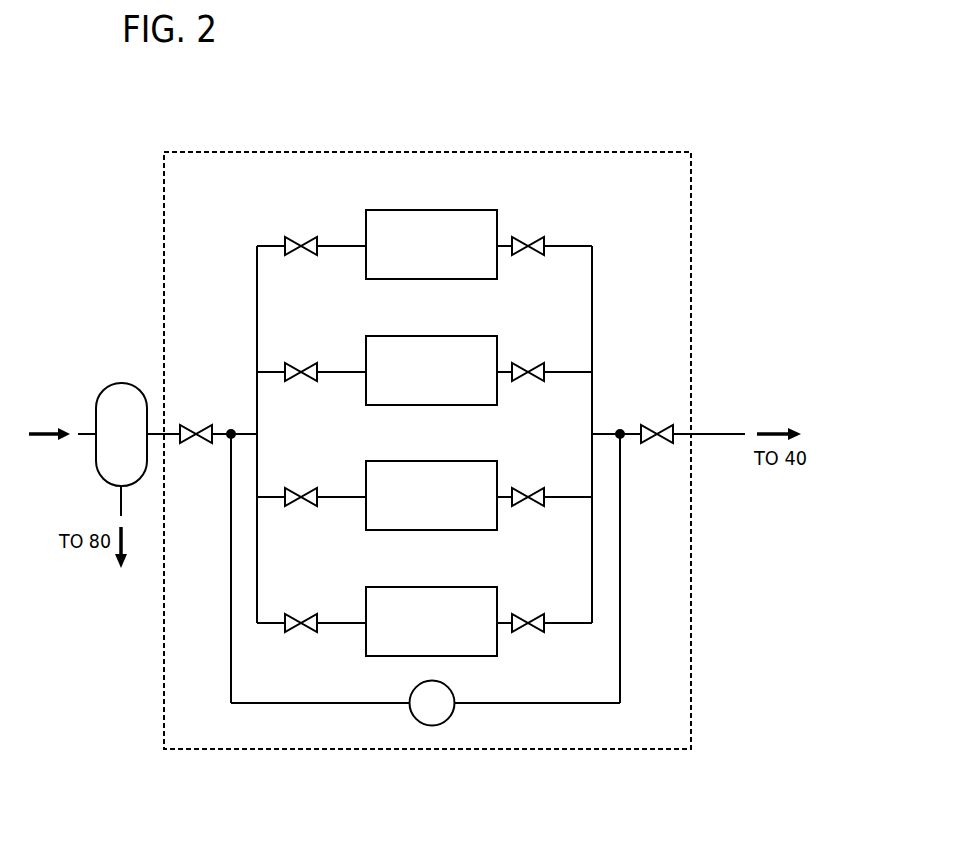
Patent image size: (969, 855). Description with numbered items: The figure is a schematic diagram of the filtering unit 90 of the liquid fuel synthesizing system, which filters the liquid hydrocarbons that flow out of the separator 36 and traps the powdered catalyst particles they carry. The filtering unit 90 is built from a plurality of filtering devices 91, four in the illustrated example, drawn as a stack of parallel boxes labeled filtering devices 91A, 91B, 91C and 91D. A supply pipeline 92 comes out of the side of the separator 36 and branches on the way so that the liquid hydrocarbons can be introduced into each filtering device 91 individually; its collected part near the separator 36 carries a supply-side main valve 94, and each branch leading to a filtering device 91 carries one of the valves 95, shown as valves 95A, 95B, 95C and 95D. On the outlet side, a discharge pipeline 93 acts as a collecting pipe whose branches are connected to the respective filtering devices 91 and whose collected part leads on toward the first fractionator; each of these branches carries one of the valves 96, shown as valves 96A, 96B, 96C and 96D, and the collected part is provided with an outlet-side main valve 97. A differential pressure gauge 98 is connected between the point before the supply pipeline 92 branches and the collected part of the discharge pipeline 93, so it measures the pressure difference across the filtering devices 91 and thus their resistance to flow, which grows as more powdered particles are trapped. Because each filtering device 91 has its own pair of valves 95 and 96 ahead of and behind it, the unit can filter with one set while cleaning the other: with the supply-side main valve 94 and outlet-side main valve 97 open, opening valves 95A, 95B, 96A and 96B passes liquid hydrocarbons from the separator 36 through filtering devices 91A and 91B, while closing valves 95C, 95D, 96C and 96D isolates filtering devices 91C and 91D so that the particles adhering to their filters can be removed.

The separator 36 is at (106, 382).
The filtering unit 90 is at (657, 151).
The filtering device 91 is at (431, 408).
The filtering device 91A is at (392, 204).
The filtering device 91B is at (392, 330).
The filtering device 91C is at (392, 455).
The filtering device 91D is at (392, 581).
The supply pipeline 92 is at (221, 430).
The discharge pipeline 93 is at (706, 432).
The supply-side main valve 94 is at (190, 445).
The valve 95 is at (311, 407).
The valve 95A is at (300, 236).
The valve 95B is at (300, 362).
The valve 95C is at (300, 487).
The valve 95D is at (300, 613).
The valve 96 is at (542, 407).
The valve 96A is at (526, 236).
The valve 96B is at (526, 362).
The valve 96C is at (526, 487).
The valve 96D is at (526, 613).
The outlet-side main valve 97 is at (652, 427).
The differential pressure gauge 98 is at (446, 726).